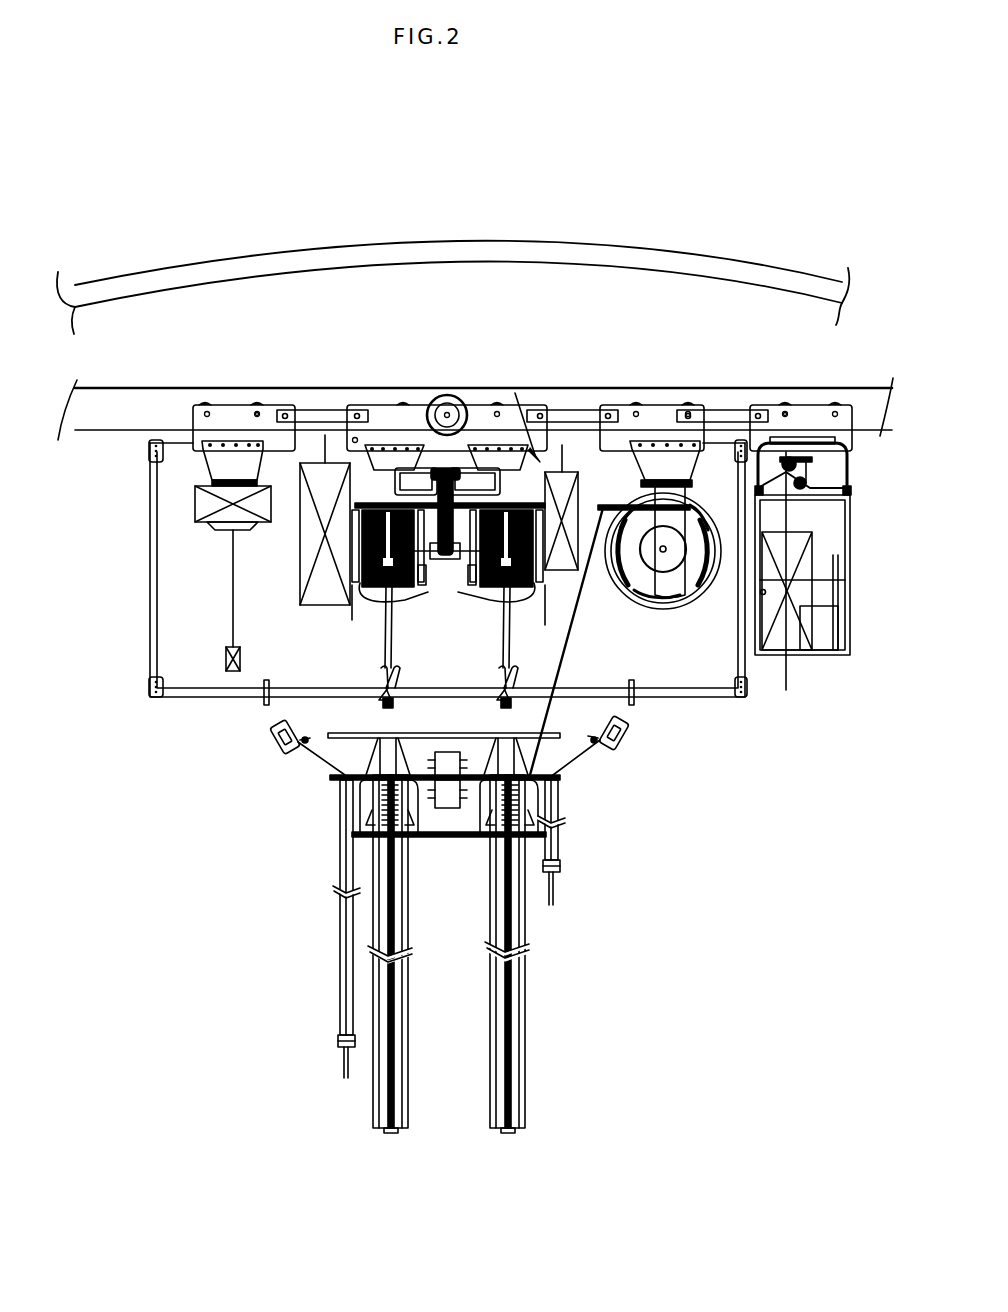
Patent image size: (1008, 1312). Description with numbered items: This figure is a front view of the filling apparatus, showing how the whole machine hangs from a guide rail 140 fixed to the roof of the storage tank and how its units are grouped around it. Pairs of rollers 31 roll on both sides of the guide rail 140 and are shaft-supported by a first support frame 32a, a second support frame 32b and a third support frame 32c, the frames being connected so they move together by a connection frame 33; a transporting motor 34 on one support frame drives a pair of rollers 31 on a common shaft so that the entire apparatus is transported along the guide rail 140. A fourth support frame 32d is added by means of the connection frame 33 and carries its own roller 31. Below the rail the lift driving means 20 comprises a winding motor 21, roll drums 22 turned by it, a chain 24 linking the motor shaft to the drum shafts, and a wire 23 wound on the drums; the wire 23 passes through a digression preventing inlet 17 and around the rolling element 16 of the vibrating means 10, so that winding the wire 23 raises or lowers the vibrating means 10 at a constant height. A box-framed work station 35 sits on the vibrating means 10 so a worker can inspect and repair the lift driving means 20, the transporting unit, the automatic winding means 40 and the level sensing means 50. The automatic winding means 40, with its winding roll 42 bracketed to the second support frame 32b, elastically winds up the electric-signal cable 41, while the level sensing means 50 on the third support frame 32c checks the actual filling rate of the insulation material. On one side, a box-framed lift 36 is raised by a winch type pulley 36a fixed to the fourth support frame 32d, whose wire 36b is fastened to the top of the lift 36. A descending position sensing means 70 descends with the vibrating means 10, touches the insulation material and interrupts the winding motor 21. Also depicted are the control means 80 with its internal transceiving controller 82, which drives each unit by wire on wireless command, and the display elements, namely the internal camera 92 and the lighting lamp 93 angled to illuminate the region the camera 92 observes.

The vibrating means 10 is at (540, 996).
The rolling element 16 is at (495, 704).
The digression preventing inlet 17 is at (383, 678).
The lift driving means 20 is at (500, 502).
The winding motor 21 is at (394, 468).
The roll drum 22 is at (383, 593).
The wire 23 is at (386, 640).
The chain 24 is at (435, 528).
The roller 31 is at (257, 403).
The first support frame 32a is at (415, 410).
The second support frame 32b is at (654, 418).
The third support frame 32c is at (232, 412).
The fourth support frame 32d is at (815, 412).
The connection frame 33 is at (320, 418).
The transporting motor 34 is at (447, 412).
The work station 35 is at (190, 700).
The lift 36 is at (828, 586).
The pulley 36a is at (797, 464).
The wire 36b is at (788, 516).
The automatic winding means 40 is at (668, 541).
The cable 41 is at (590, 620).
The winding roll 42 is at (672, 565).
The level sensing means 50 is at (182, 514).
The descending position sensing means 70 is at (574, 861).
The control means 80 is at (291, 566).
The internal transceiving controller 82 is at (540, 418).
The internal camera 92 is at (272, 740).
The lighting lamp 93 is at (623, 740).
The guide rail 140 is at (708, 398).